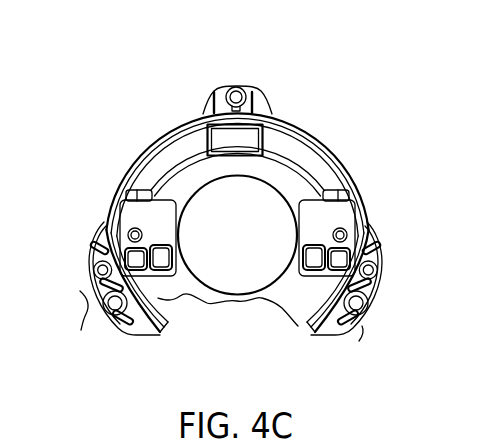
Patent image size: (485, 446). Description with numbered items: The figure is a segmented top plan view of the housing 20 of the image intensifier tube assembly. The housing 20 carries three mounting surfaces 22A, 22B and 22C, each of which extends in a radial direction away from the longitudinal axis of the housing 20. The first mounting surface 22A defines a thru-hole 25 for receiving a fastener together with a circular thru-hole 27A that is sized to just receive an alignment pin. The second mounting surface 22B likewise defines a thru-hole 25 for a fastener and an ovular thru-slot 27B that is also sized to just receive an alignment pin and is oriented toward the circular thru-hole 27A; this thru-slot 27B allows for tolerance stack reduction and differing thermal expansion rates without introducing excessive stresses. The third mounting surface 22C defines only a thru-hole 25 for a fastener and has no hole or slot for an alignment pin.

The housing 20 is at (237, 201).
The mounting surface 22A is at (92, 296).
The mounting surface 22B is at (379, 292).
The mounting surface 22C is at (213, 90).
The thru-hole 25 is at (211, 92).
The circular thru-hole 27A is at (93, 268).
The ovular thru-slot 27B is at (378, 266).